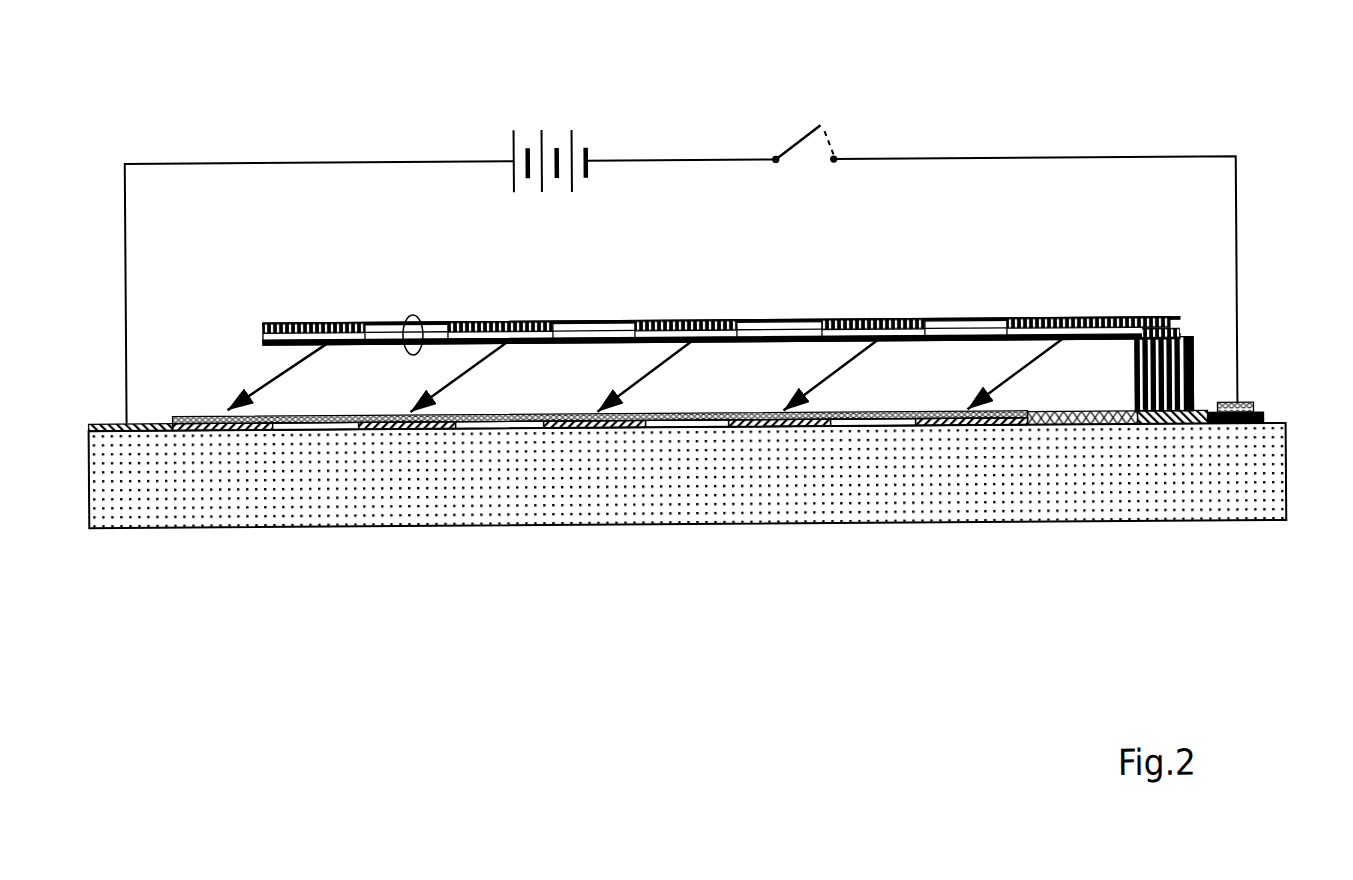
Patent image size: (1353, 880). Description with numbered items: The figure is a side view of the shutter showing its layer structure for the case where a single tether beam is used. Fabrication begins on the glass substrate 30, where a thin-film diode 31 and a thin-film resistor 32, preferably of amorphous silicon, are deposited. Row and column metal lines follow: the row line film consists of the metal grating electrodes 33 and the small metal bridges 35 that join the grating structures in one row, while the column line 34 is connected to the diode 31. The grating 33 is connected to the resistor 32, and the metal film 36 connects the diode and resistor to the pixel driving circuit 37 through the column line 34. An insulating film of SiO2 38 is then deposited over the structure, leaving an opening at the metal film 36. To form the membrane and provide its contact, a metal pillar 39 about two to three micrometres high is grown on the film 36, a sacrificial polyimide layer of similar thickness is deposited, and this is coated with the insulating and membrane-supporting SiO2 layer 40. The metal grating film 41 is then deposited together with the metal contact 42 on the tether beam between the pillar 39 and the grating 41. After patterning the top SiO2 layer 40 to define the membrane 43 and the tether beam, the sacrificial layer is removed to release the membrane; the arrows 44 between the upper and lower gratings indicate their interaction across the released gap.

The glass substrate 30 is at (592, 485).
The thin-film diode 31 is at (1263, 421).
The thin-film resistor 32 is at (1077, 423).
The metal grating electrodes 33 is at (398, 423).
The column line 34 is at (1247, 406).
The small metal bridges 35 is at (122, 419).
The metal film 36 is at (1163, 423).
The pixel driving circuit 37 is at (367, 161).
The insulating film of SiO2 38 is at (870, 421).
The metal pillar 39 is at (1170, 373).
The SiO2 layer 40 is at (784, 255).
The metal grating film 41 is at (677, 323).
The metal contact 42 is at (1177, 330).
The membrane 43 is at (418, 318).
The electrostatic force 44 is at (645, 376).